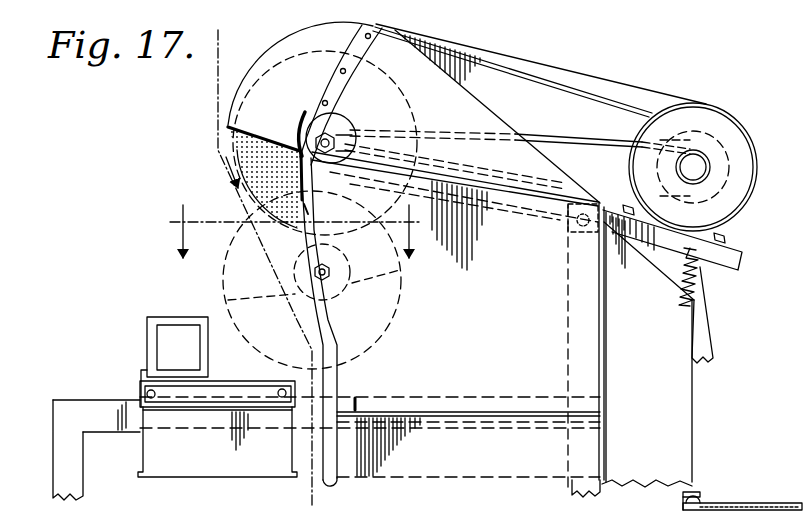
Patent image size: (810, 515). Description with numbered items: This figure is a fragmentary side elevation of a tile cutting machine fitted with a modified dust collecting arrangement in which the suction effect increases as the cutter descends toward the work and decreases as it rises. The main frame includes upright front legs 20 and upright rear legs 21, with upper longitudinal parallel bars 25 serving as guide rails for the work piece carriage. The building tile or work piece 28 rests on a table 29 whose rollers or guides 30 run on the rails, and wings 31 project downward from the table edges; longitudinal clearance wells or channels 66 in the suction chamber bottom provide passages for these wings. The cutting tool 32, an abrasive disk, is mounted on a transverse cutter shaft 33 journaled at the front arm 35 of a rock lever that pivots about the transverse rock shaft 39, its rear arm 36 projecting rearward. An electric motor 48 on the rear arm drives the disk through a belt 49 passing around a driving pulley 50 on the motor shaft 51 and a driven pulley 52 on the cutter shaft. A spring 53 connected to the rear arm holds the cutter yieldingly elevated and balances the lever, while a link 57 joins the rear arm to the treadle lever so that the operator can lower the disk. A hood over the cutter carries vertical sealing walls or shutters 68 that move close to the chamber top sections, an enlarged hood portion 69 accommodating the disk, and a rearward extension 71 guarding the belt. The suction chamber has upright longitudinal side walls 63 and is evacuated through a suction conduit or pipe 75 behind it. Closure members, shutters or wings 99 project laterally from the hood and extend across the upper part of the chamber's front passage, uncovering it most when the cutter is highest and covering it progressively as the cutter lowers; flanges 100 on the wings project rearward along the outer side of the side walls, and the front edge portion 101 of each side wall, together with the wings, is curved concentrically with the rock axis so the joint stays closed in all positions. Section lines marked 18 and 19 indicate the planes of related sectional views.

The section line 18- 18 is at (270, 263).
The section line 19- 19 is at (290, 235).
The upright front legs 20 is at (60, 448).
The upright rear legs 21 is at (572, 488).
The upper longitudinal parallel bars 25 is at (92, 400).
The building tile or work piece 28 is at (160, 317).
The table 29 is at (225, 383).
The rollers or guides 30 is at (155, 392).
The wings 31 is at (217, 442).
The cutting tool 32 is at (233, 142).
The cutter shaft 33 is at (327, 140).
The front arm of rock lever 35 is at (478, 212).
The rear arm of rock lever 36 is at (742, 258).
The transverse rock shaft 39 is at (578, 226).
The electric motor 48 is at (718, 112).
The belt 49 is at (590, 136).
The driving pulley 50 is at (715, 150).
The motor shaft 51 is at (700, 170).
The driven pulley 52 is at (455, 159).
The spring 53 is at (700, 280).
The link 57 is at (710, 338).
The upright longitudinal side walls 63 is at (742, 496).
The longitudinal clearance wells or channels 66 is at (372, 346).
The vertical sealing walls or shutters 68 is at (343, 143).
The enlarged hood portion 69 is at (272, 68).
The rearward extension 71 is at (533, 78).
The suction conduit or pipe 75 is at (688, 420).
The closure members, shutters or wings 99 is at (330, 70).
The flanges 100 is at (703, 500).
The front edge portion of side wall 101 is at (310, 212).